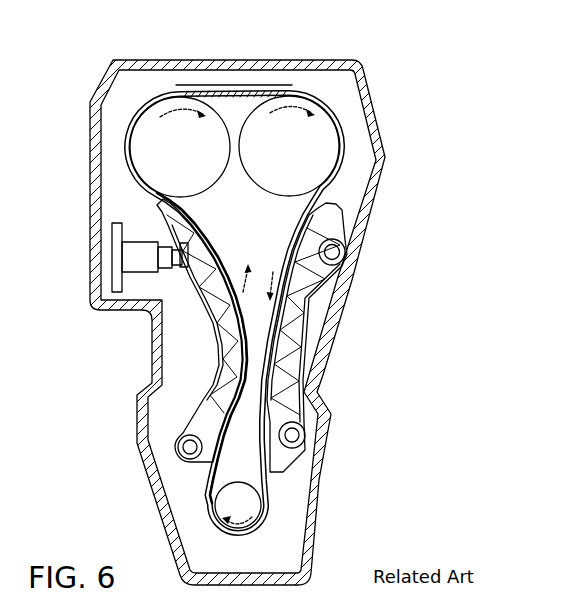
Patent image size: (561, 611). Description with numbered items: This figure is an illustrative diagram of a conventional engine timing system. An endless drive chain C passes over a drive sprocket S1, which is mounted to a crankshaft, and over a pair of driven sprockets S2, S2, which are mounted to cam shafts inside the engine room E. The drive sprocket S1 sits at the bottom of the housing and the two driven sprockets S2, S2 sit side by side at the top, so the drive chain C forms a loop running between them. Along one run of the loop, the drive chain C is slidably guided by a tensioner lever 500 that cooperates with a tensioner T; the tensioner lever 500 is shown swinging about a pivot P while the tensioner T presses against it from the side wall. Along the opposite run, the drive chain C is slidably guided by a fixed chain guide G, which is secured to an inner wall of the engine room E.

The drive chain C is at (236, 86).
The driven sprockets S2 is at (140, 148).
The drive sprocket S1 is at (252, 508).
The engine room E is at (91, 223).
The tensioner T is at (143, 277).
The tensioner lever 500 is at (213, 356).
The pivot shaft P is at (178, 451).
The fixed chain guide G is at (300, 326).